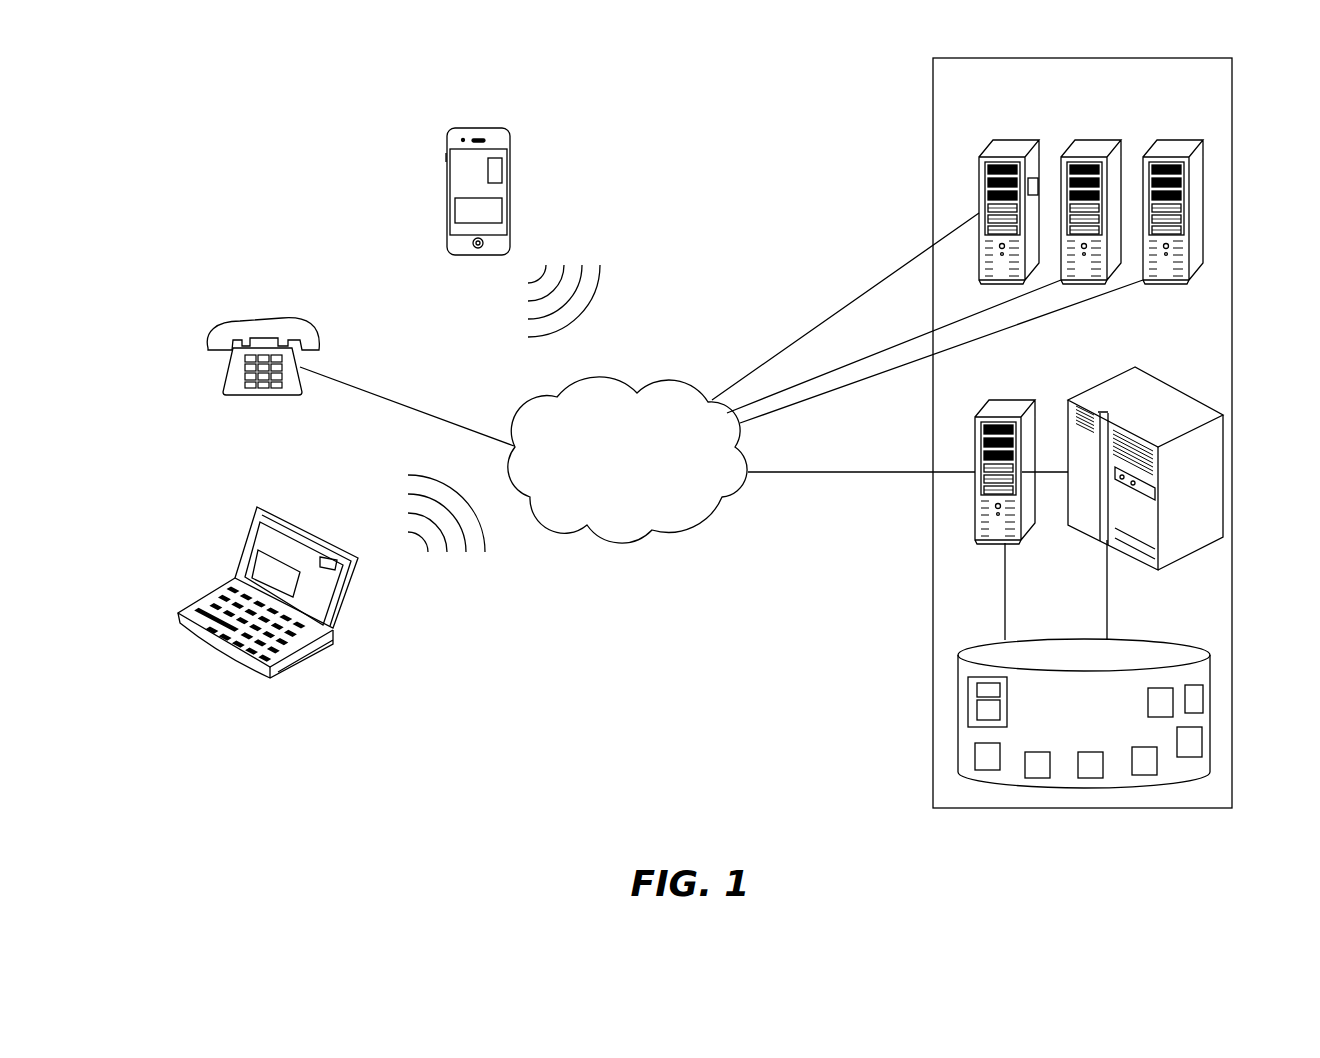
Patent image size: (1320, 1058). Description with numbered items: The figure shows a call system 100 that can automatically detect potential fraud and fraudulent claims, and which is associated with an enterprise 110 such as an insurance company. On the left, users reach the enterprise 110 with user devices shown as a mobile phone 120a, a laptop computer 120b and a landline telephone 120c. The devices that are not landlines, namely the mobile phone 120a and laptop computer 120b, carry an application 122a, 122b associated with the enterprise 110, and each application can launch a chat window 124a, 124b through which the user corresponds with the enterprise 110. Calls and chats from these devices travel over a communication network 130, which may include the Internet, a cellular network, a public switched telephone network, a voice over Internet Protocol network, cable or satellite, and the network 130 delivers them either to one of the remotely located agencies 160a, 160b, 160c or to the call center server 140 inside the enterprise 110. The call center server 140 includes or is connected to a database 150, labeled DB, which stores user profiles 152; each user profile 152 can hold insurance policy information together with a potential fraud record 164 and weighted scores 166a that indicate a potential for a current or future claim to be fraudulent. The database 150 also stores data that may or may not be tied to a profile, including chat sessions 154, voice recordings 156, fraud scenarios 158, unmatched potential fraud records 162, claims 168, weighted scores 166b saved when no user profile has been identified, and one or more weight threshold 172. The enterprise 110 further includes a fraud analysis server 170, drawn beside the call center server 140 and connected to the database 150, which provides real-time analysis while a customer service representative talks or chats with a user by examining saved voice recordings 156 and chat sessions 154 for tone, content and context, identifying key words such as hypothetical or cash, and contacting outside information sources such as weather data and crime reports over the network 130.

The call system 100 is at (183, 185).
The enterprise 110 is at (933, 125).
The user device 120a is at (510, 134).
The user device 120b is at (352, 597).
The user device 120c is at (313, 323).
The application 122a is at (502, 172).
The application 122b is at (330, 560).
The chat window 124a is at (502, 210).
The chat window 124b is at (258, 553).
The communication network 130 is at (621, 544).
The call center server 140 is at (1010, 402).
The database 150 is at (1168, 640).
The user profile 152 is at (972, 672).
The chat session 154 is at (986, 770).
The voice recording 156 is at (1037, 778).
The fraud scenario 158 is at (1090, 778).
The agency 160a is at (1018, 140).
The agency 160b is at (1098, 140).
The agency 160c is at (1181, 140).
The unmatched potential fraud record 162 is at (1145, 775).
The potential fraud record 164 is at (977, 710).
The weighted score 166a is at (977, 690).
The weighted score 166b is at (1202, 742).
The claim 168 is at (1203, 695).
The fraud analysis server 170 is at (1160, 389).
The weight threshold 172 is at (1160, 688).